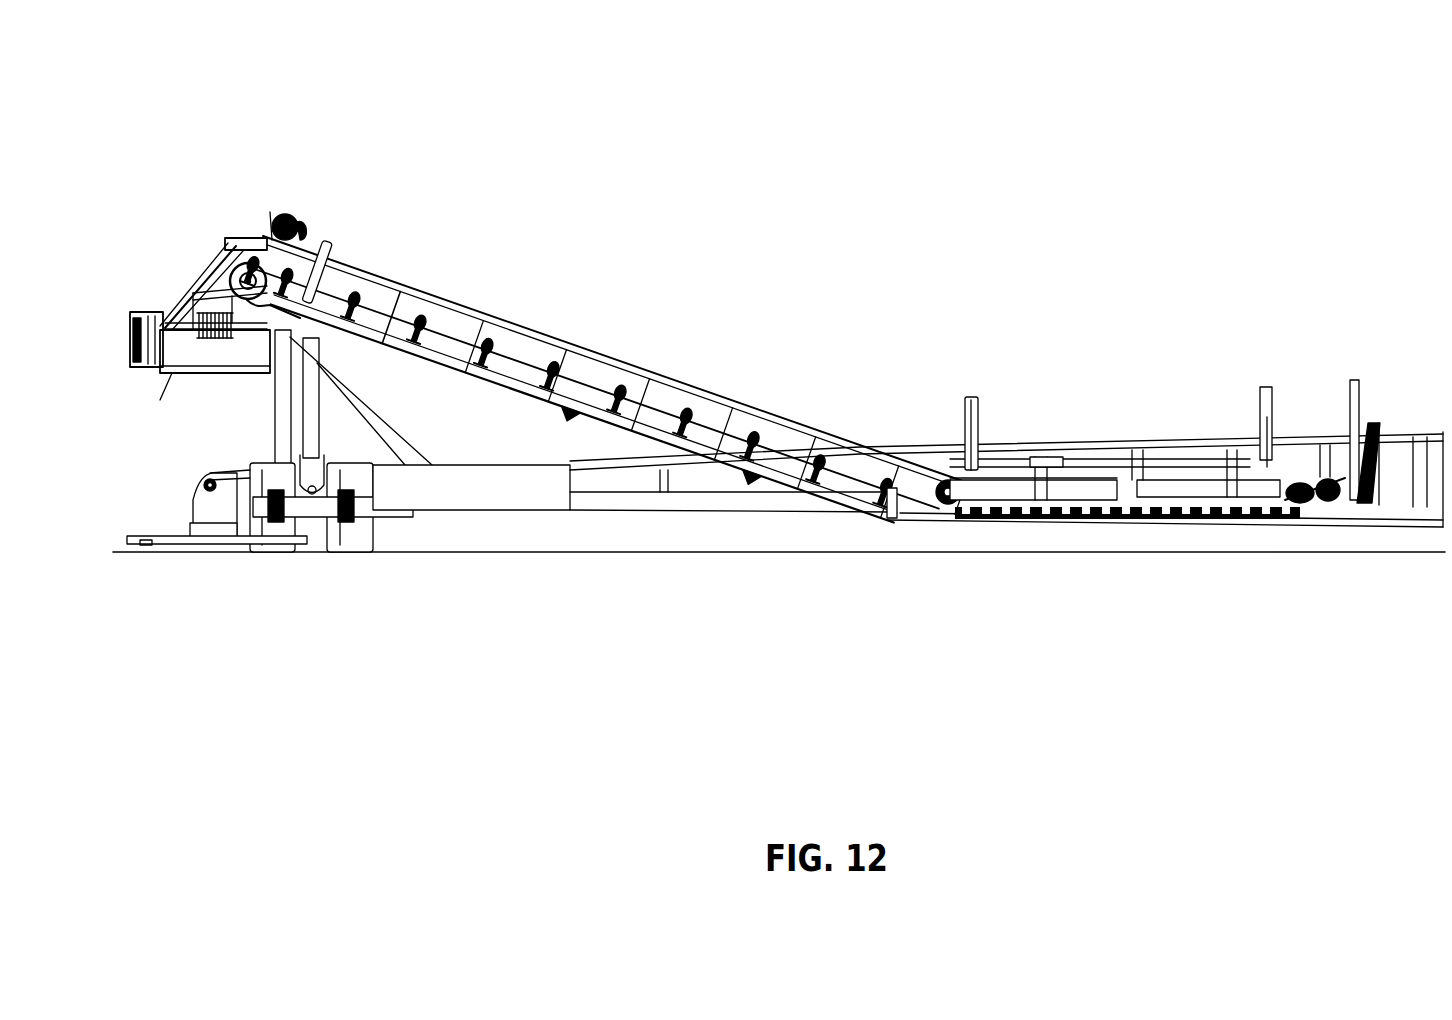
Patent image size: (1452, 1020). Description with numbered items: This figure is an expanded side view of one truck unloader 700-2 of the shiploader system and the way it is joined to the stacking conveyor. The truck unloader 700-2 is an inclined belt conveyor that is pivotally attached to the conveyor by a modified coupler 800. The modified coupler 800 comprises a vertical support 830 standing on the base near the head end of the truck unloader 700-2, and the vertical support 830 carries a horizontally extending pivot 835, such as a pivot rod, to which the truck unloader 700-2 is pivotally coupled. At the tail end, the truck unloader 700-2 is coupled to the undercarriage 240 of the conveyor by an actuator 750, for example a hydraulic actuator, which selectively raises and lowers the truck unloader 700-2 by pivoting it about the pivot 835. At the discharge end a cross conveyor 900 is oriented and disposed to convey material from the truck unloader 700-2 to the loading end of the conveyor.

The truck unloader 700-2 is at (212, 198).
The modified coupler 800 is at (432, 390).
The pivot 835 is at (398, 292).
The cross conveyor 900 is at (198, 378).
The vertical support 830 is at (272, 387).
The undercarriage 240 is at (1303, 430).
The actuator 750 is at (1378, 470).